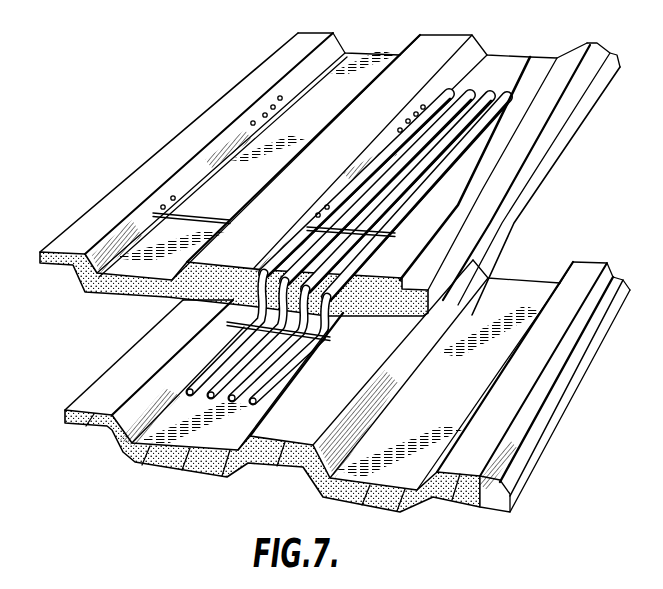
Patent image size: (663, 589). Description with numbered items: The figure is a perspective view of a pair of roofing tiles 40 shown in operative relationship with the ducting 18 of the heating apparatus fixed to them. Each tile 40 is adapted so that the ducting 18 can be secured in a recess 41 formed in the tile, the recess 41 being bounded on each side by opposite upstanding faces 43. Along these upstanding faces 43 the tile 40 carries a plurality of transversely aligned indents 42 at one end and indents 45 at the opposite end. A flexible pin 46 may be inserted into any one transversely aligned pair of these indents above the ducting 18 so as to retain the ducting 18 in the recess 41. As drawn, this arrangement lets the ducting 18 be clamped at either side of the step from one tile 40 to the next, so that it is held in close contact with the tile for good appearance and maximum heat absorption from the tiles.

The ducting 18 is at (483, 60).
The roofing tile 40 is at (530, 199).
The recess 41 is at (521, 70).
The indents 42 is at (280, 96).
The upstanding faces 43 is at (378, 78).
The indents 45 is at (327, 206).
The flexible pin 46 is at (396, 230).